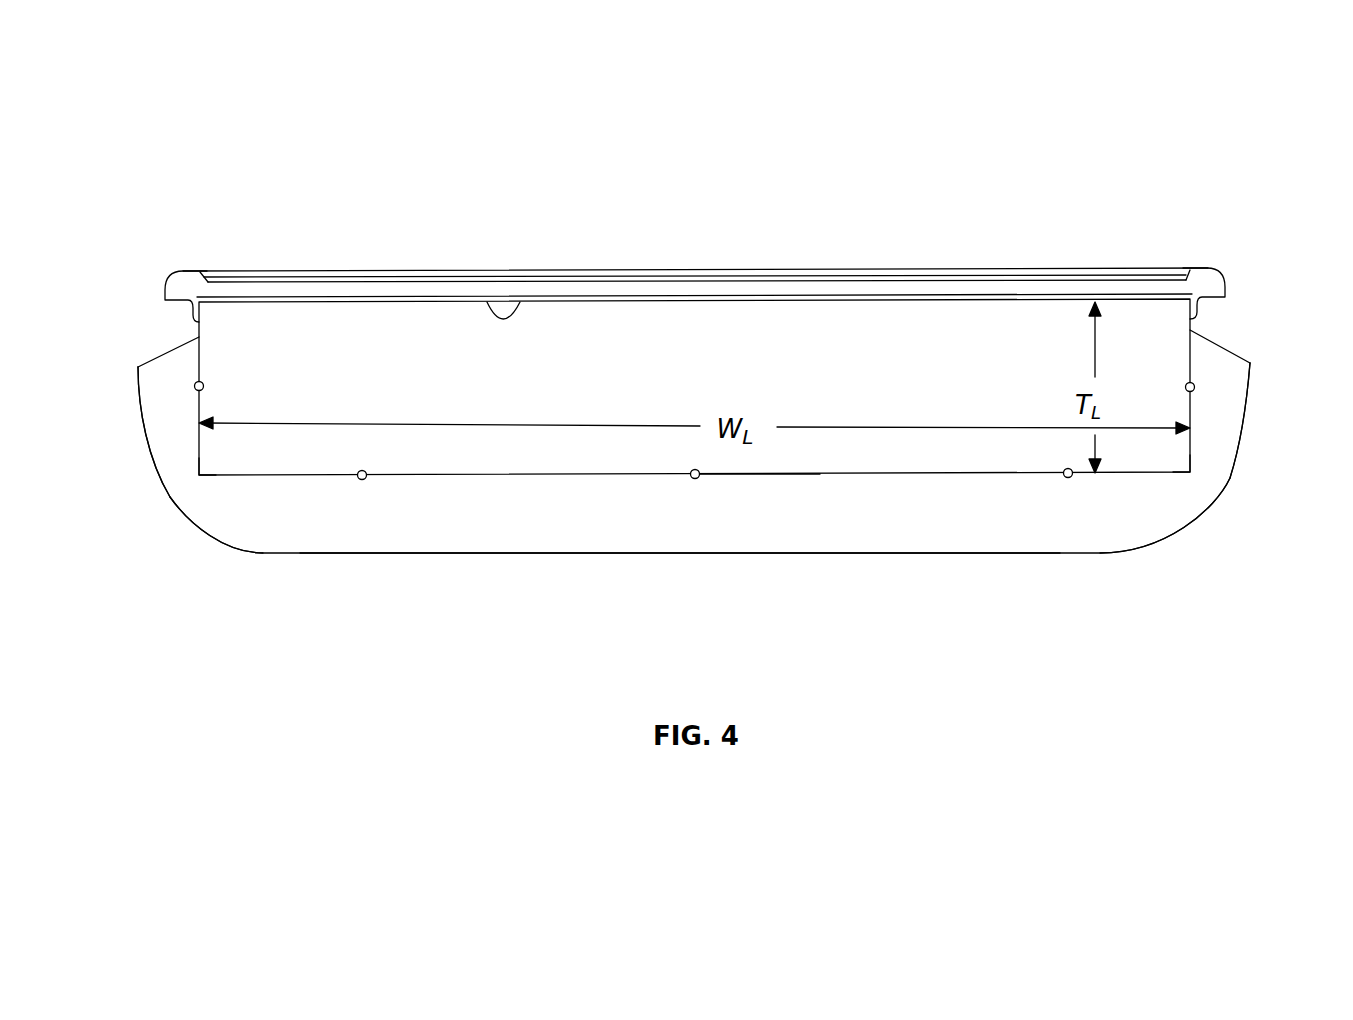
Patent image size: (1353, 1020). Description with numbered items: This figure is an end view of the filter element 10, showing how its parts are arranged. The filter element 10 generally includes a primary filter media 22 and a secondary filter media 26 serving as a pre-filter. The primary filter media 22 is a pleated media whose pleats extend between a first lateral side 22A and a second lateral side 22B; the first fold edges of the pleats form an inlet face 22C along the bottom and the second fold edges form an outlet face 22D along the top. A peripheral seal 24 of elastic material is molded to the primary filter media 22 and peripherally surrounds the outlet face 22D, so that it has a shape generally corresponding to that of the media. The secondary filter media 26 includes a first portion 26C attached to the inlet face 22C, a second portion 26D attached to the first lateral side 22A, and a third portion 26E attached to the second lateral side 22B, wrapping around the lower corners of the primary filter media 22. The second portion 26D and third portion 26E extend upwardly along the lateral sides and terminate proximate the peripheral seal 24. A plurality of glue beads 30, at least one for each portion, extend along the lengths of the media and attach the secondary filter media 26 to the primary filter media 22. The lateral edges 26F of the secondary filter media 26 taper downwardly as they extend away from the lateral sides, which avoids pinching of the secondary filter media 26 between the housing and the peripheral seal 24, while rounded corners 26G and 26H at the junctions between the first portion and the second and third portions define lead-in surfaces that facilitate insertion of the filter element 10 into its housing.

The filter element 10 is at (1250, 167).
The primary filter media 22 is at (930, 418).
The first lateral side 22A is at (199, 458).
The second lateral side 22B is at (1191, 391).
The inlet face 22C is at (757, 474).
The outlet face 22D is at (515, 300).
The peripheral seal 24 is at (215, 270).
The secondary filter media 26 is at (540, 506).
The first portion 26C is at (442, 537).
The second portion 26D is at (172, 398).
The third portion 26E is at (1223, 390).
The lateral edges 26F is at (160, 355).
The rounded corner 26G is at (170, 497).
The rounded corner 26H is at (1227, 487).
The glue bead 30 is at (362, 470).